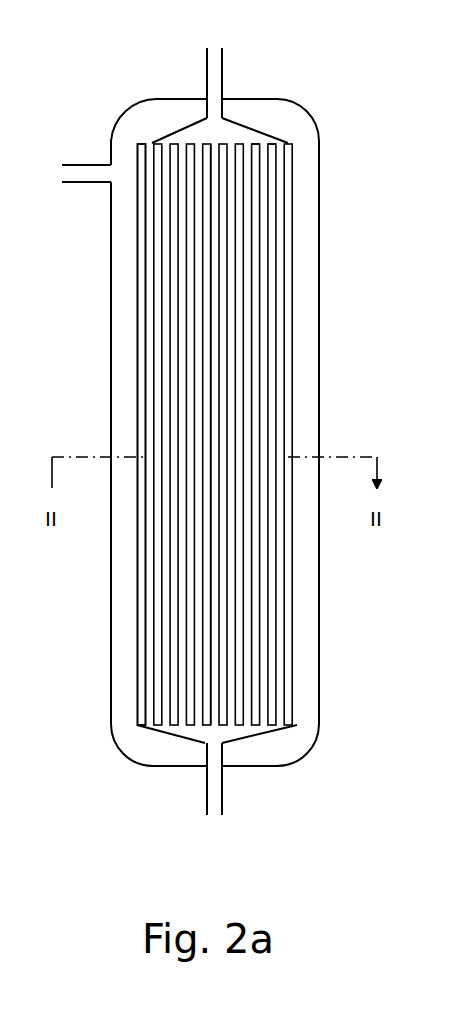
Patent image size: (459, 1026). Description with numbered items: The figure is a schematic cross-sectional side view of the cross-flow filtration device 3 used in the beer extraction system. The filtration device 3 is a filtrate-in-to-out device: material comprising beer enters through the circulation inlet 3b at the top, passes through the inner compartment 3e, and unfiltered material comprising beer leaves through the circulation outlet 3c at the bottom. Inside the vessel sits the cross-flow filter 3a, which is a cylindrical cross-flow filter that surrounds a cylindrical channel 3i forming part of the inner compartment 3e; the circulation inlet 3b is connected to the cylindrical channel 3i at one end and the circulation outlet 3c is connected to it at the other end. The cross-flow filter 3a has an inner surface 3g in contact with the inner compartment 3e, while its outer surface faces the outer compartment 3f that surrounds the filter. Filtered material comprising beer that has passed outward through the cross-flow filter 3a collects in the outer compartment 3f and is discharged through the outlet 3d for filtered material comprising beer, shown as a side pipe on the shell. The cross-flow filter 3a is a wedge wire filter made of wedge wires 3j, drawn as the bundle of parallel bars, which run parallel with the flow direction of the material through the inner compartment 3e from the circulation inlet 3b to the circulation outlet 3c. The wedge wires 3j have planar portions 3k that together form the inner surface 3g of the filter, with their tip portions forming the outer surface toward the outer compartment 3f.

The cross-flow filtration device 3 is at (110, 326).
The cross-flow filter 3a is at (150, 614).
The circulation inlet 3b is at (193, 65).
The circulation outlet 3c is at (244, 793).
The outlet for filtered material comprising beer 3d is at (82, 198).
The inner compartment 3e is at (197, 132).
The outer compartment 3f is at (308, 687).
The inner surface 3g is at (218, 220).
The cylindrical channel 3i is at (282, 328).
The wedge wires 3j is at (272, 145).
The planar portions 3k is at (222, 478).